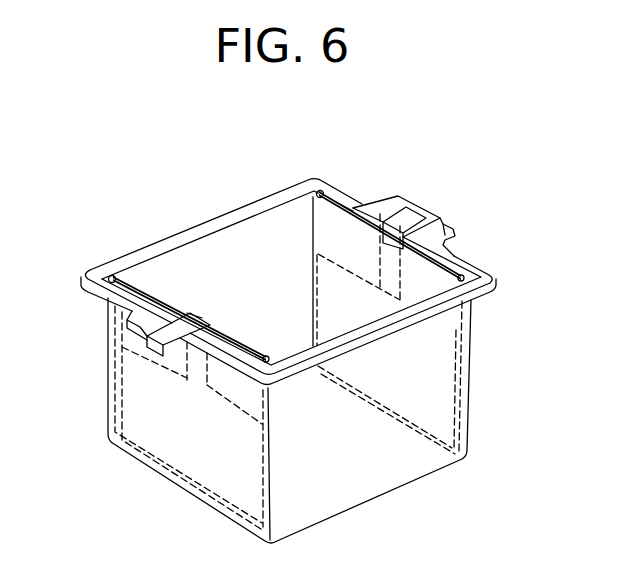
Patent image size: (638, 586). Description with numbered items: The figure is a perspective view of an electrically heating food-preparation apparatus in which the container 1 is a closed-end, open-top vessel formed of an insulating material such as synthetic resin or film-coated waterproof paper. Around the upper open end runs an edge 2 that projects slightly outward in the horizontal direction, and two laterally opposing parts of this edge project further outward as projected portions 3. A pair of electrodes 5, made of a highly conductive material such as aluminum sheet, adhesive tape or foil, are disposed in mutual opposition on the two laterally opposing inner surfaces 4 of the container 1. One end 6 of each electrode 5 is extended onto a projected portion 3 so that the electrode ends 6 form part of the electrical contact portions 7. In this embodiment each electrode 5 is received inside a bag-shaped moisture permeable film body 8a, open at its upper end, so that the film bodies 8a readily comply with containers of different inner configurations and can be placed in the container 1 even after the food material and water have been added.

The container 1 is at (473, 330).
The edge 2 is at (225, 218).
The projected portions 3 is at (135, 333).
The inner surfaces 4 is at (112, 275).
The electrode 5 is at (188, 460).
The end 6 is at (194, 313).
The electrical contact portions 7 is at (147, 359).
The bag-shaped moisture permeable film bodies 8a is at (166, 300).